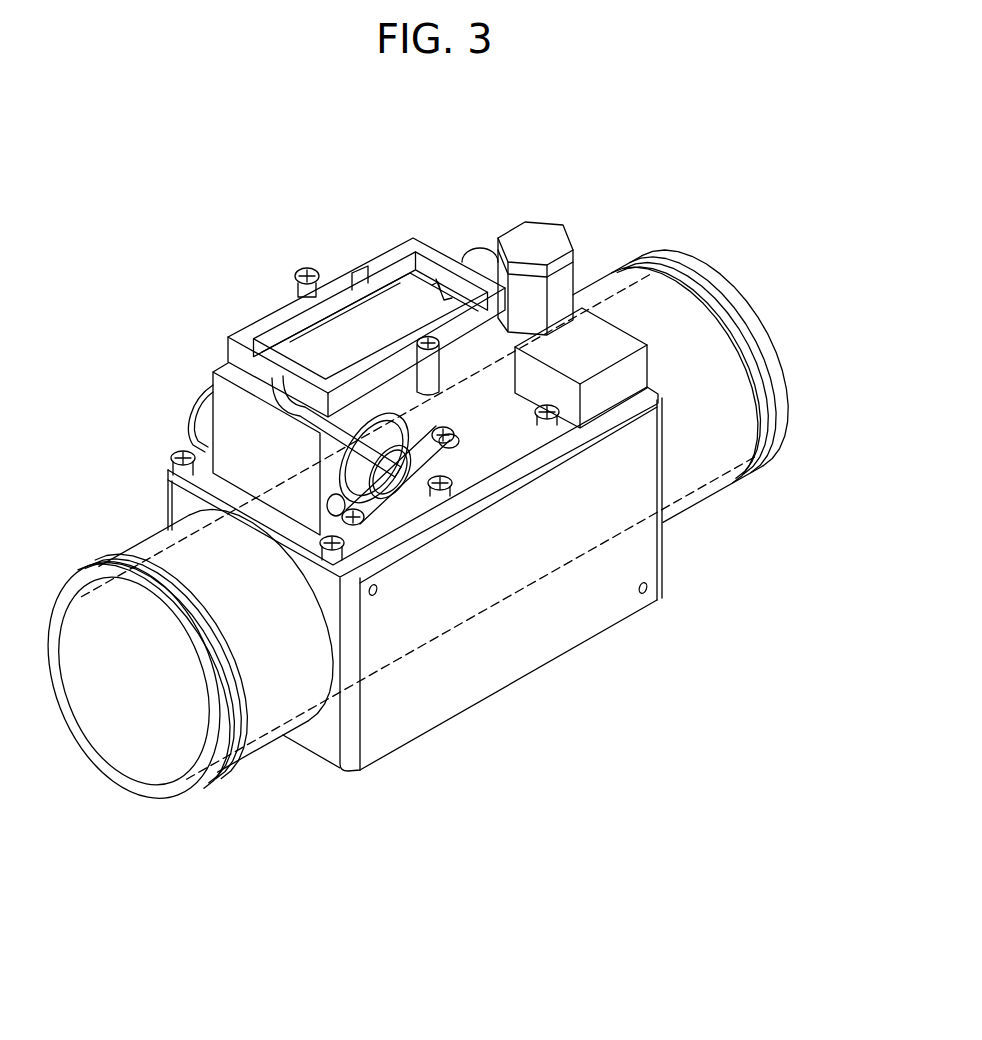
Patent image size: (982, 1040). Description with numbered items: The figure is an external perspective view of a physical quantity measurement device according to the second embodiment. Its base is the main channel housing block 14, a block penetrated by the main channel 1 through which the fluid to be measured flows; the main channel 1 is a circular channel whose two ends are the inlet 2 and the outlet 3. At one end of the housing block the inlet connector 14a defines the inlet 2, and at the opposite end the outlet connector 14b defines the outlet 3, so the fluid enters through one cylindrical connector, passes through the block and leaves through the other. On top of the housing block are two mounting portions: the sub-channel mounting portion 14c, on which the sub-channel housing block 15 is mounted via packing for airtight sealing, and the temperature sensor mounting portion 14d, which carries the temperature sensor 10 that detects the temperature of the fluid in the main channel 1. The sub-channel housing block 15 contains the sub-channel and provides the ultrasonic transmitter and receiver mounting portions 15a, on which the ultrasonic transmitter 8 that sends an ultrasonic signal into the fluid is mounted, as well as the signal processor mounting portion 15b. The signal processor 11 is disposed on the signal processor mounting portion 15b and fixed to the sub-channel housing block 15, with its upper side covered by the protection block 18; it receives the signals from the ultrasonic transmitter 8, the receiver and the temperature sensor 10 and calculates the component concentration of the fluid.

The main channel 1 is at (437, 637).
The inlet 2 is at (123, 782).
The outlet 3 is at (768, 332).
The ultrasonic transmitter 8 is at (392, 478).
The temperature sensor 10 is at (536, 243).
The signal processor 11 is at (307, 343).
The main channel housing block 14 is at (390, 725).
The inlet connector 14a is at (140, 552).
The outlet connector 14b is at (672, 300).
The sub-channel mounting portion 14c is at (427, 528).
The temperature sensor mounting portion 14d is at (585, 345).
The sub-channel housing block 15 is at (277, 437).
The ultrasonic transmitter and receiver mounting portions 15a is at (213, 405).
The signal processor mounting portion 15b is at (237, 373).
The protection block 18 is at (360, 268).